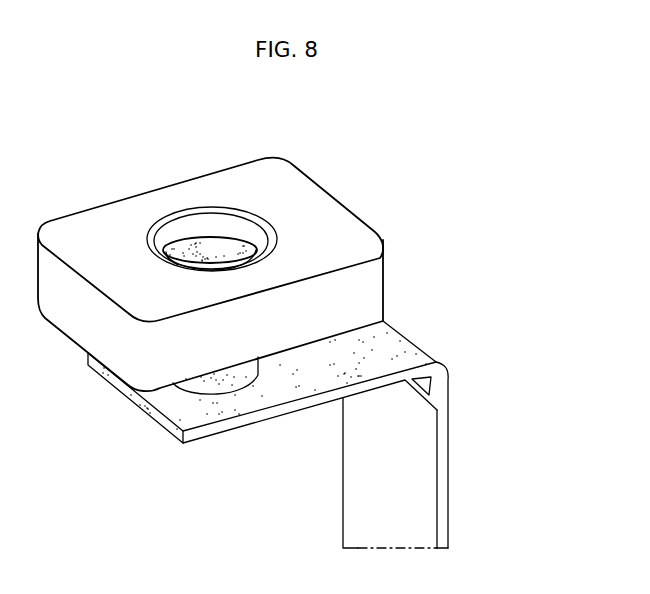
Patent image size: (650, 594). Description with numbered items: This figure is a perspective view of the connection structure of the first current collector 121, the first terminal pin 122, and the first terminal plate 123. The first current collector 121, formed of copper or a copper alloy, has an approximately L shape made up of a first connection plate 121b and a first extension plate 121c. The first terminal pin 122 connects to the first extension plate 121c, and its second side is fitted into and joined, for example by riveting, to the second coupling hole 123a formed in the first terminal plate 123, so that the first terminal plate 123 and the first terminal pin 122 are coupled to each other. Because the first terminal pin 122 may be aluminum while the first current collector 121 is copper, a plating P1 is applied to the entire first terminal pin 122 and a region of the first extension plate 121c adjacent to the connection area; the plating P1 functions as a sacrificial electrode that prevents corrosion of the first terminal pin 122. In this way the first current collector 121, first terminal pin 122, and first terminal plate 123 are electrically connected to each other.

The first current collector 121 is at (315, 413).
The first connection plate 121b is at (420, 465).
The first extension plate 121c is at (393, 348).
The first terminal pin 122 is at (187, 382).
The first terminal plate 123 is at (333, 207).
The second coupling hole 123a is at (222, 210).
The plating P1 is at (213, 381).